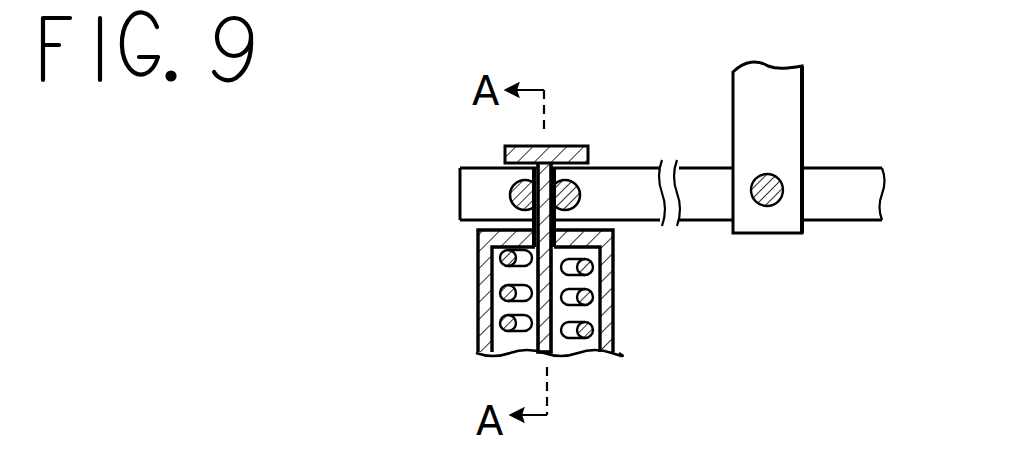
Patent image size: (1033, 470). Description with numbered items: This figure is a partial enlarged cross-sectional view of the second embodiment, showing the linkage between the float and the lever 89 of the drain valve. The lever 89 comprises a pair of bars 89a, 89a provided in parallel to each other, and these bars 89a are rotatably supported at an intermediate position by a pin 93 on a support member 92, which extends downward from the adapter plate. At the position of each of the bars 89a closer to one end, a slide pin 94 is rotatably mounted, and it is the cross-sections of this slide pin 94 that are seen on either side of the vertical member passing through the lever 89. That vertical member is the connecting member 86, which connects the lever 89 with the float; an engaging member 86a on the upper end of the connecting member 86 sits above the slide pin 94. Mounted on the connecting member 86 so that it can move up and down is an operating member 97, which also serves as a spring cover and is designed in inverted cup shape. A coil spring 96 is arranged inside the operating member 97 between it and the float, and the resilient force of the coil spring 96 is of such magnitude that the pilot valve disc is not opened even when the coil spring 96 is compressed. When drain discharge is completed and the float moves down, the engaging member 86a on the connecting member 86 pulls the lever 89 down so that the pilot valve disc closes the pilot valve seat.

The connecting member 86 is at (478, 303).
The engaging member 86a is at (512, 143).
The lever 89 is at (642, 147).
The bar 89a is at (850, 220).
The support member 92 is at (790, 90).
The pin 93 is at (767, 207).
The slide pin 94 is at (581, 198).
The coil spring 96 is at (613, 340).
The operating member 97 is at (613, 297).